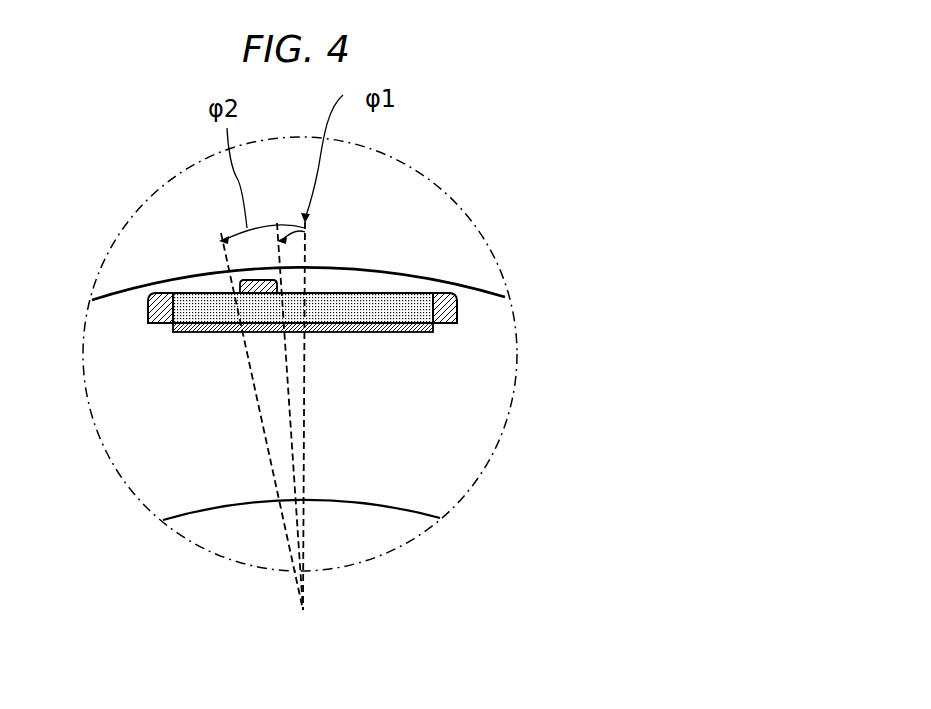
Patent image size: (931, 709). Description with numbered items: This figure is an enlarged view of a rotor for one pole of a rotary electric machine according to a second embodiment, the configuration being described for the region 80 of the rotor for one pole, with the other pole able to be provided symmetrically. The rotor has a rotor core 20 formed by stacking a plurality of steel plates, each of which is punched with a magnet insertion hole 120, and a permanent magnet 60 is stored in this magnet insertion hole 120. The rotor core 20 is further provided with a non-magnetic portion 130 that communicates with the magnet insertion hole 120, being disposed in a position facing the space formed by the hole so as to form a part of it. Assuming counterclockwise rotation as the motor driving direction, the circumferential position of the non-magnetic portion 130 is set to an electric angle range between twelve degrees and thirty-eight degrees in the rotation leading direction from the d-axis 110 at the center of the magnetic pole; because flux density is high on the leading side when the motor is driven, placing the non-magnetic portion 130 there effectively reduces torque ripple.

The rotor core 20 is at (443, 427).
The permanent magnet 60 is at (400, 320).
The region 80 is at (207, 153).
The d-axis 110 is at (307, 252).
The magnet insertion hole 120 is at (148, 303).
The non-magnetic portion 130 is at (243, 282).